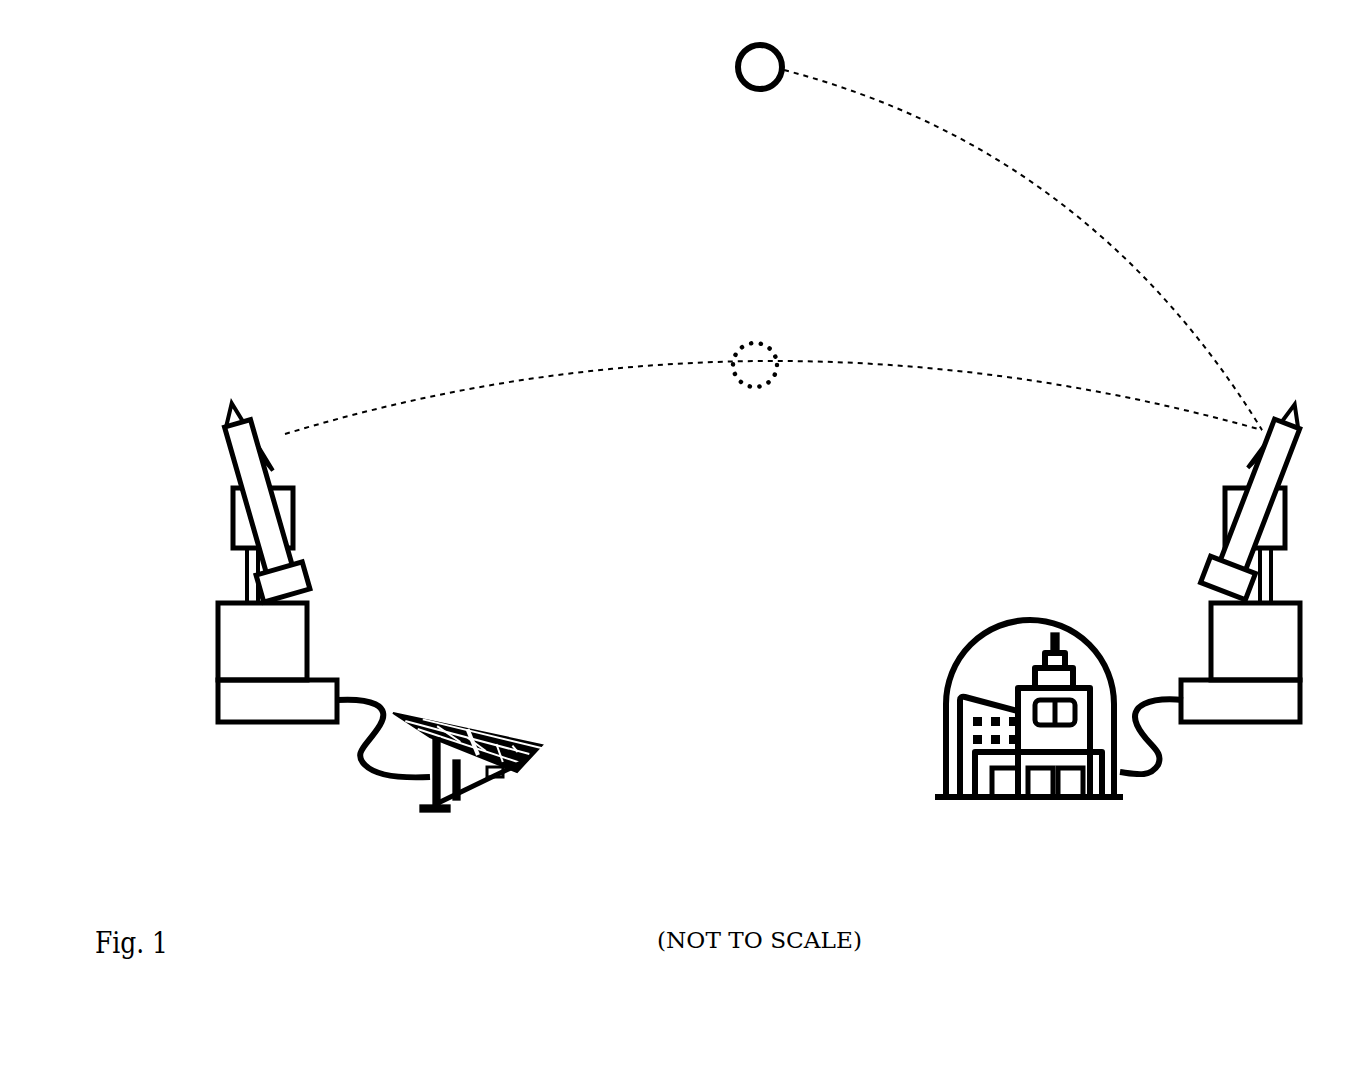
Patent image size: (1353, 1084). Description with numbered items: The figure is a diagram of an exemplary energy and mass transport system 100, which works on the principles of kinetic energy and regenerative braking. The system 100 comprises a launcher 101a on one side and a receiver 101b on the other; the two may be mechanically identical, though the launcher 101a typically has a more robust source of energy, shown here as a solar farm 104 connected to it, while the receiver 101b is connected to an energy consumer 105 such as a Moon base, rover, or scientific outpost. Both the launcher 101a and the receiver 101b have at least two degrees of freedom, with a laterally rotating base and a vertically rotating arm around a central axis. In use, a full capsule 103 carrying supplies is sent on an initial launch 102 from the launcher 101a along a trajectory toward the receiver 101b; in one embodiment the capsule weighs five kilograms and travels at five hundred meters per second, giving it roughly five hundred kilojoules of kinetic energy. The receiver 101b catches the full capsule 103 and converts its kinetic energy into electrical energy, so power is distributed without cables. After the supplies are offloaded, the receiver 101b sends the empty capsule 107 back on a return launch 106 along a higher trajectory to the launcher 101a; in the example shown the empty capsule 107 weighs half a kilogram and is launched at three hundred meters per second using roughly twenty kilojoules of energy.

The energy and mass transport system 100 is at (314, 819).
The launcher 101a is at (325, 598).
The receiver 101b is at (1213, 547).
The initial launch 102 is at (503, 382).
The full capsule 103 is at (762, 340).
The solar farm 104 is at (535, 764).
The energy consumer 105 is at (940, 717).
The return launch 106 is at (1112, 222).
The empty capsule 107 is at (733, 63).